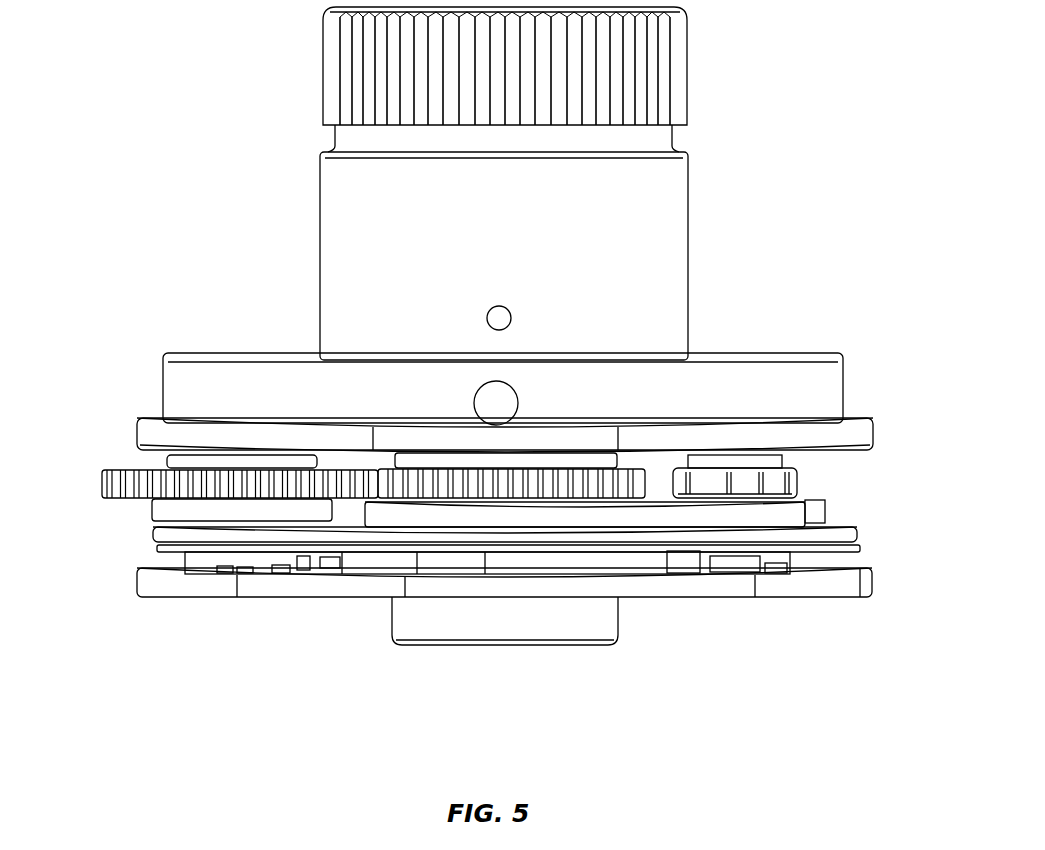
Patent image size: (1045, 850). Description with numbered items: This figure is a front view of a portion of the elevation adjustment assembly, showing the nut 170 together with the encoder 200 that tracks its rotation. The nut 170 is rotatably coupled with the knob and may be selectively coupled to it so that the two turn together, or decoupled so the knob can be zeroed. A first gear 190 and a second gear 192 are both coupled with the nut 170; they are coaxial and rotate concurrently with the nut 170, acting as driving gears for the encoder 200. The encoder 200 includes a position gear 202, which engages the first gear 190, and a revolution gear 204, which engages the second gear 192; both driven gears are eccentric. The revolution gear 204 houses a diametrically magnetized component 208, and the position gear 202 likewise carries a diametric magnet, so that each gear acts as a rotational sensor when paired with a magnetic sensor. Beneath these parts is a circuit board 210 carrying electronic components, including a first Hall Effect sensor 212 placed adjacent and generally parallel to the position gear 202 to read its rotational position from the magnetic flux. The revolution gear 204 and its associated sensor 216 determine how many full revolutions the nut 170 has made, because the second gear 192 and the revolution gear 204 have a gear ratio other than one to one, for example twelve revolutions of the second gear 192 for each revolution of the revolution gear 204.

The nut 170 is at (688, 215).
The first gear 190 is at (420, 470).
The second gear 192 is at (617, 527).
The encoder 200 is at (263, 605).
The position gear 202 is at (130, 472).
The revolution gear 204 is at (797, 487).
The diametrically magnetized component 208 is at (723, 427).
The circuit board 210 is at (345, 598).
The first Hall Effect sensor 212 is at (183, 557).
The sensor 216 is at (787, 550).